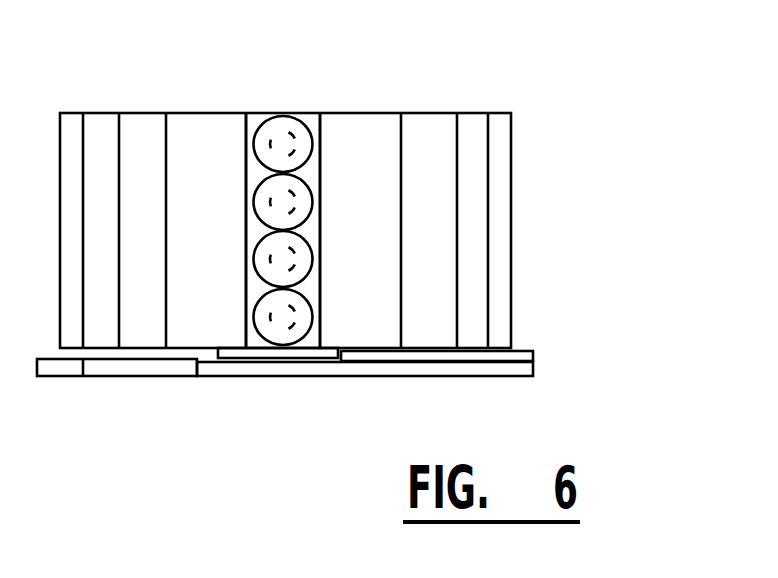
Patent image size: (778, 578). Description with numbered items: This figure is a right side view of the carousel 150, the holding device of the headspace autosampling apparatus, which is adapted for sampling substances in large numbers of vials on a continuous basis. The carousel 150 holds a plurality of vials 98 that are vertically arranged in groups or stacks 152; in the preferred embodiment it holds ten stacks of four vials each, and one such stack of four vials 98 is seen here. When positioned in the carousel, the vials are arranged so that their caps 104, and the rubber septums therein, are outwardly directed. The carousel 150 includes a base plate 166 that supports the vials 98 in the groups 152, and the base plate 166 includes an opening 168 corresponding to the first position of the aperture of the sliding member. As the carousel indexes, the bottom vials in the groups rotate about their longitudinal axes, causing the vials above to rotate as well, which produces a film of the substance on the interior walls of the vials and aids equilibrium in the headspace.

The vials 98 is at (288, 127).
The caps 104 is at (313, 208).
The stacks 152 is at (313, 266).
The carousel 150 is at (550, 294).
The base plate 166 is at (531, 362).
The opening 168 is at (117, 376).